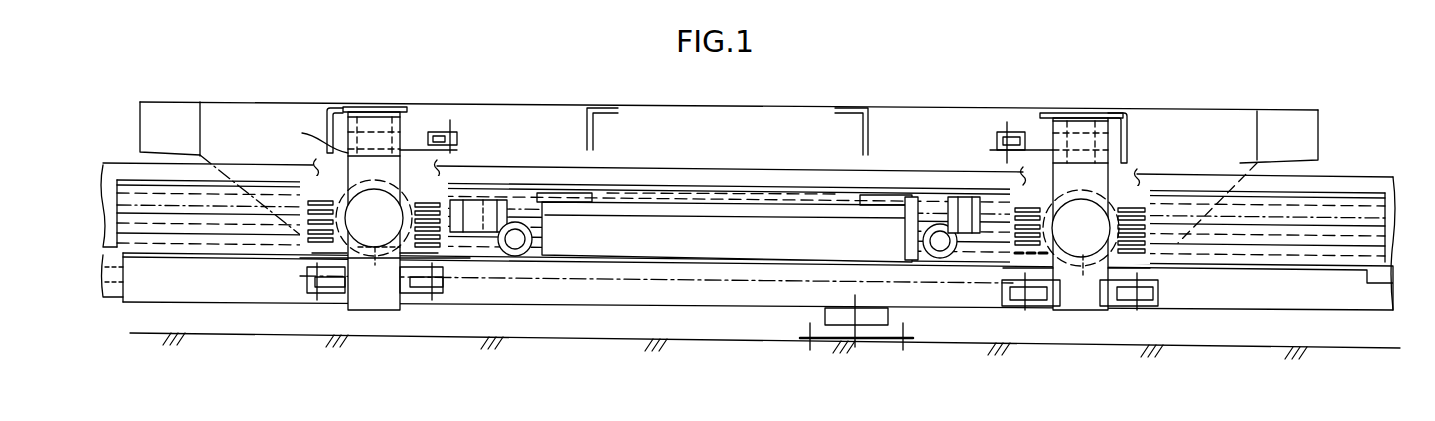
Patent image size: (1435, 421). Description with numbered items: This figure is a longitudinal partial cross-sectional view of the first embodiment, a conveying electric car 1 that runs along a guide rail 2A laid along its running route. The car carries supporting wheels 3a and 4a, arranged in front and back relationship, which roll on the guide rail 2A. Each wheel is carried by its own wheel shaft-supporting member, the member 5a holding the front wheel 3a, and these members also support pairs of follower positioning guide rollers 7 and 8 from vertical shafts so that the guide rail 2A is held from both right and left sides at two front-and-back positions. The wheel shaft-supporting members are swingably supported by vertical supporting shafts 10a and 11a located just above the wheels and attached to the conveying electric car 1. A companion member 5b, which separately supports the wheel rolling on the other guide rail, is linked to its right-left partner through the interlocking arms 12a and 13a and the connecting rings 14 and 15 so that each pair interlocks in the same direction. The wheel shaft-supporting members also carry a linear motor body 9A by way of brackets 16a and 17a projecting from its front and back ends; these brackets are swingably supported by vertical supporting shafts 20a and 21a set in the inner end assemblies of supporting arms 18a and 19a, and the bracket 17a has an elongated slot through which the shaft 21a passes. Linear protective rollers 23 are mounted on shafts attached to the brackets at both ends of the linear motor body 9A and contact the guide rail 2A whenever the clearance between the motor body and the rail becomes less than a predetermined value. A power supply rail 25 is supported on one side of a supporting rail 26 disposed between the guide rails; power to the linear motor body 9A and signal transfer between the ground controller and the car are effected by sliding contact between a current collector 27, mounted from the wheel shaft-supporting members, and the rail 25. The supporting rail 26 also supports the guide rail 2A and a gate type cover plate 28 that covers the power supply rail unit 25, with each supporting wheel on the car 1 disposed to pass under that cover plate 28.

The conveying electric car 1 is at (880, 107).
The guide rail 2A is at (1263, 293).
The supporting wheel 3a is at (1085, 250).
The supporting wheel 4a is at (372, 262).
The wheel shaft-supporting member 5a is at (1087, 182).
The wheel shaft-supporting member 5b is at (306, 135).
The follower positioning guide rollers 7 is at (1010, 293).
The follower positioning guide rollers 8 is at (300, 287).
The linear motor body 9A is at (733, 233).
The vertical supporting shaft 10a is at (1077, 137).
The vertical supporting shaft 11a is at (375, 135).
The interlocking arm 12a is at (1033, 137).
The interlocking arm 13a is at (410, 137).
The connecting ring 14 is at (993, 137).
The connecting ring 15 is at (465, 138).
The bracket 16a is at (925, 210).
The bracket 17a is at (527, 207).
The supporting arm 18a is at (998, 235).
The supporting arm 19a is at (467, 240).
The vertical supporting shaft 20a is at (960, 195).
The vertical supporting shaft 21a is at (490, 197).
The linear protective rollers 23 is at (525, 255).
The power supply rail 25 is at (212, 237).
The supporting rail 26 is at (1263, 207).
The current collector 27 is at (300, 237).
The cover plate 28 is at (670, 168).